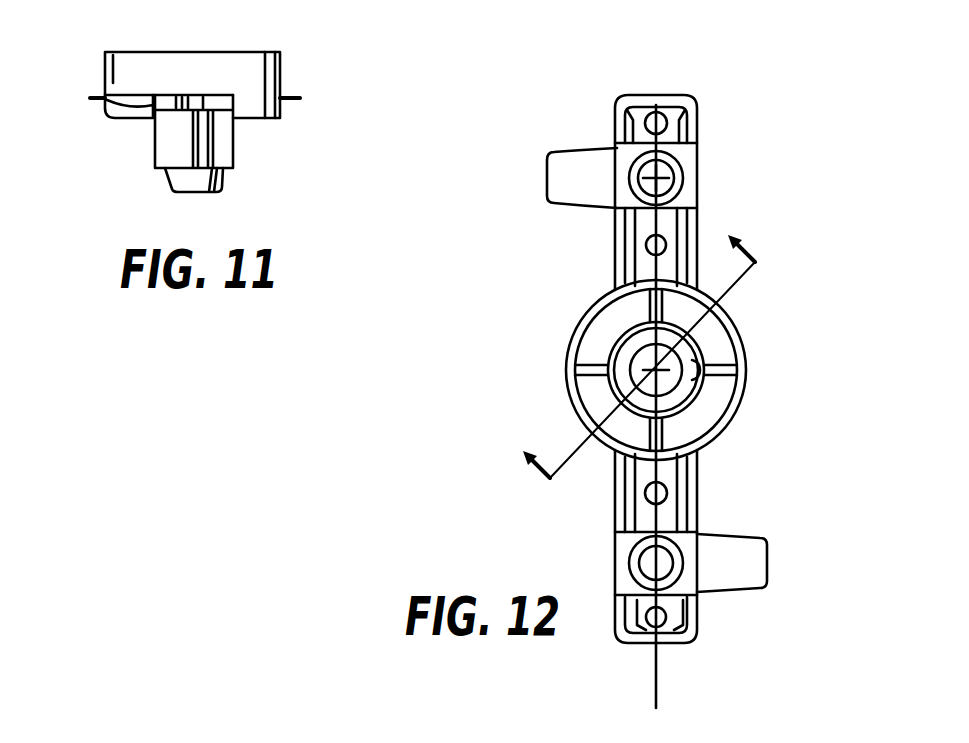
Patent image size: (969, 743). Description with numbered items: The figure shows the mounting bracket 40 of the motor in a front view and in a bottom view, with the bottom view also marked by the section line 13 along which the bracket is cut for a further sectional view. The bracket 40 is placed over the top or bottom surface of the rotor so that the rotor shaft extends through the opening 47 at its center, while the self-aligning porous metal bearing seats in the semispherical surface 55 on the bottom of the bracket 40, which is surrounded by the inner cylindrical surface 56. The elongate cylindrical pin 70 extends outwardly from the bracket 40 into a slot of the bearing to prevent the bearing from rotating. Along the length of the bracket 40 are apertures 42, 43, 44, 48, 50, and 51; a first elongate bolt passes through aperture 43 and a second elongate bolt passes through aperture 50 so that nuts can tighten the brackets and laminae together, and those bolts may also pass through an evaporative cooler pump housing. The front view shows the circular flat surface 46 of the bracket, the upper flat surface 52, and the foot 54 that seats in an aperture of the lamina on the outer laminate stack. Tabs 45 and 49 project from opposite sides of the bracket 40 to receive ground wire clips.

In FIG. 12, the section line 13- 13 is at (627, 348).
In FIG. 11, the mounting bracket 40 is at (128, 43).
In FIG. 12, the mounting bracket 40 is at (662, 86).
In FIG. 12, the aperture 42 is at (668, 130).
In FIG. 12, the aperture 43 is at (677, 193).
In FIG. 12, the aperture 44 is at (646, 245).
In FIG. 11, the tab 45 is at (294, 96).
In FIG. 12, the tab 45 is at (767, 540).
In FIG. 11, the circular flat surface 46 is at (232, 52).
In FIG. 12, the opening 47 is at (722, 323).
In FIG. 12, the aperture 48 is at (684, 490).
In FIG. 11, the tab 49 is at (99, 93).
In FIG. 12, the tab 49 is at (577, 152).
In FIG. 12, the aperture 50 is at (684, 578).
In FIG. 12, the aperture 51 is at (688, 603).
In FIG. 11, the upper flat surface 52 is at (217, 96).
In FIG. 11, the foot 54 is at (225, 189).
In FIG. 12, the semispherical surface 55 is at (626, 352).
In FIG. 12, the inner cylindrical surface 56 is at (584, 349).
In FIG. 12, the elongate cylindrical pin 70 is at (707, 393).